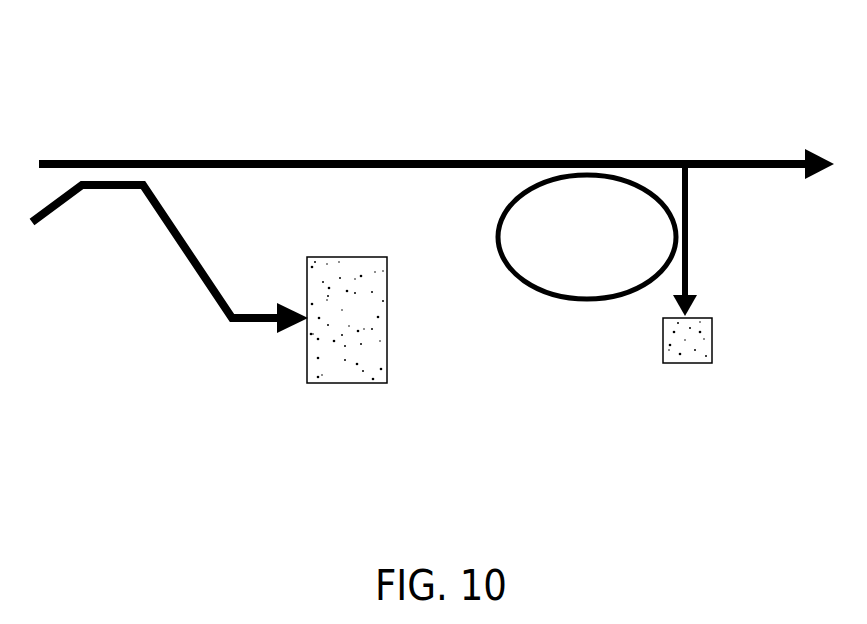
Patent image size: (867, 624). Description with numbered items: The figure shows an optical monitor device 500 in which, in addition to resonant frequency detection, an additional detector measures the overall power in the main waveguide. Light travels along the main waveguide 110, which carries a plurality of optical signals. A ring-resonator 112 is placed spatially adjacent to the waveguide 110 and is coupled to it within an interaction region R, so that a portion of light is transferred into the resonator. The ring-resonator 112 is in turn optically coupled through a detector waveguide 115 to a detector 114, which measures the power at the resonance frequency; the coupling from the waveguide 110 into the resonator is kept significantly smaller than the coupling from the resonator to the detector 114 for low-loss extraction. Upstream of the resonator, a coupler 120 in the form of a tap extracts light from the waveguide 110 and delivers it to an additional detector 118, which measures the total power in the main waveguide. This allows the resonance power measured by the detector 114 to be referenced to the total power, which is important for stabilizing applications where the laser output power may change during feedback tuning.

The optical monitor device 500 is at (596, 96).
The waveguide 110 is at (436, 152).
The coupler 120 is at (113, 188).
The additional detector 118 is at (307, 362).
The ring-resonator 112 is at (540, 293).
The detector waveguide 115 is at (688, 232).
The detector 114 is at (663, 348).